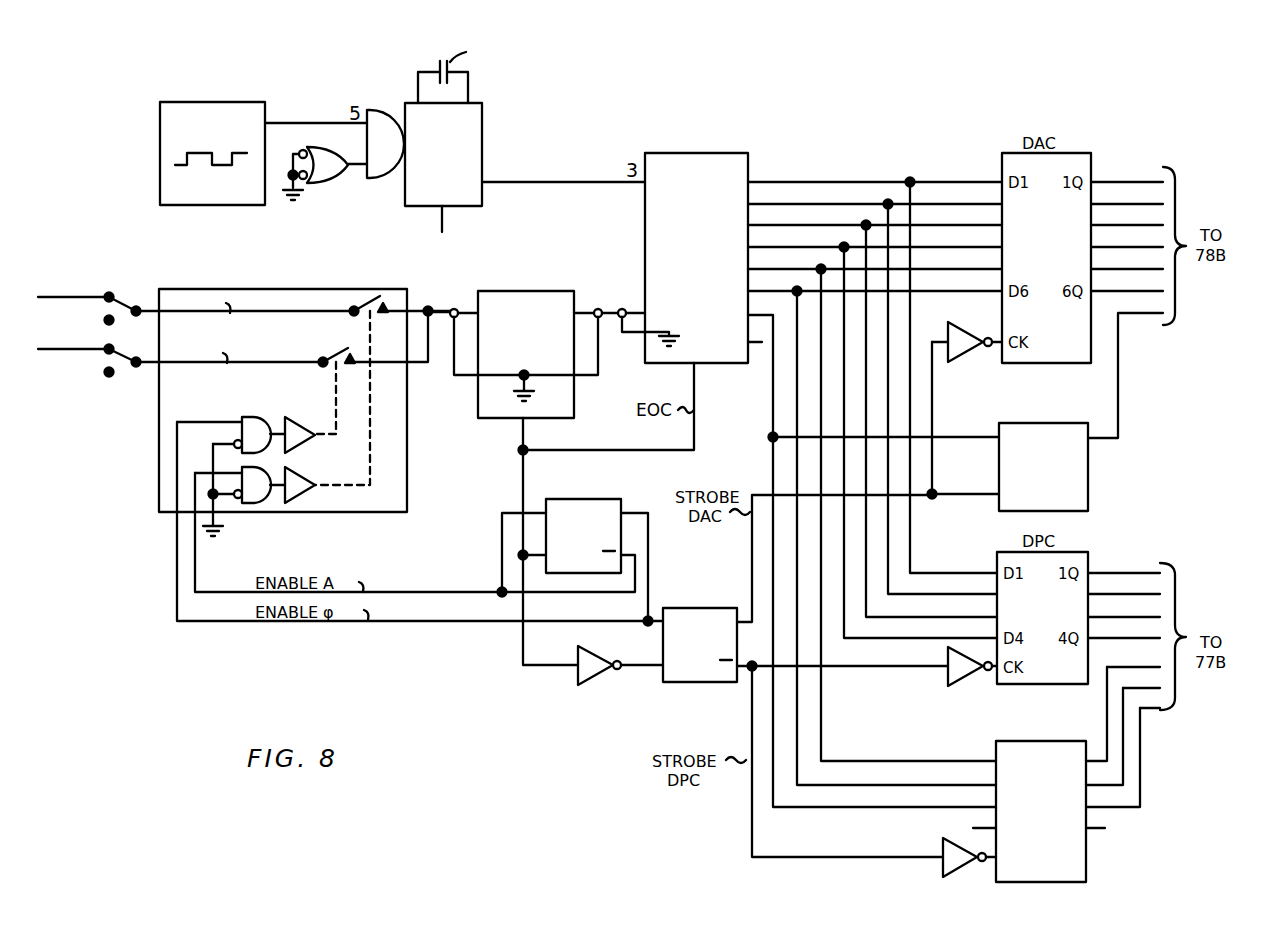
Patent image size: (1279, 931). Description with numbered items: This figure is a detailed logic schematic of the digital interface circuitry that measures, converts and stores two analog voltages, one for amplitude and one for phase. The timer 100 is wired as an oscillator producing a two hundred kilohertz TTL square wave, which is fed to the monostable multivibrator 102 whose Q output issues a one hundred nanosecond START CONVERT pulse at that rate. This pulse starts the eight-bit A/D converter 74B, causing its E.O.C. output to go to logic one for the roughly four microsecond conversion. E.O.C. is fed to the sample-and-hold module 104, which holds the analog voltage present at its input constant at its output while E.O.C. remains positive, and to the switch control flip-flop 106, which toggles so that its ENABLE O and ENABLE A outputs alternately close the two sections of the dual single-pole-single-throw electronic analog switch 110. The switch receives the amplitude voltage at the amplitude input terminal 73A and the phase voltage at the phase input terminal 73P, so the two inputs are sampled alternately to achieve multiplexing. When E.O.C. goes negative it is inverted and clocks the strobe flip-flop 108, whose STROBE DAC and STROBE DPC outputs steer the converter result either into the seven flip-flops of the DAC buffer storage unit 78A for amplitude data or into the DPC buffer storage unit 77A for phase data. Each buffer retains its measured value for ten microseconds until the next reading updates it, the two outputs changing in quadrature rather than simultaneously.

The timer 100 is at (229, 139).
The monostable multivibrator 102 is at (462, 149).
The sample-and-hold module 104 is at (535, 291).
The switch control flip-flop 106 is at (600, 550).
The strobe flip-flop 108 is at (716, 656).
The dual single-pole-single-throw electronic analog switch 110 is at (265, 289).
The 8-bit A/D converter 74B is at (700, 153).
The DAC buffer storage unit 78A is at (1065, 423).
The DPC buffer storage unit 77A is at (1066, 700).
The amplitude input terminal 73A is at (89, 300).
The phase input terminal 73P is at (89, 352).